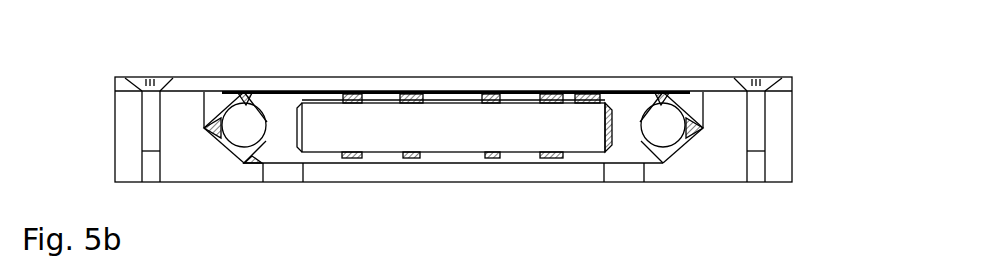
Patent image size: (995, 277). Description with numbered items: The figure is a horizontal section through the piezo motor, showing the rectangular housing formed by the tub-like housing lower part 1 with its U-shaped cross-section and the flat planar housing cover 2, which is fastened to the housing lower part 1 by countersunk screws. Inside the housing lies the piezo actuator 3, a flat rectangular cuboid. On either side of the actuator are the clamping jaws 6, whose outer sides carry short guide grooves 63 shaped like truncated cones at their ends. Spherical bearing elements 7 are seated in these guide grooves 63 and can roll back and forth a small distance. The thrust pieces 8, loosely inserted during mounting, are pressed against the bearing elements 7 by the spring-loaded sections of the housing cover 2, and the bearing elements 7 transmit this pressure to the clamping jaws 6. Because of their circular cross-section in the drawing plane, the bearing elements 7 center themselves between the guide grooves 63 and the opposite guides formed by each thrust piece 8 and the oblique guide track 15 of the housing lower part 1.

The housing lower part 1 is at (713, 163).
The housing cover 2 is at (393, 80).
The piezo actuator 3 is at (440, 127).
The clamping jaws 6 is at (278, 108).
The bearing elements 7 is at (242, 122).
The thrust pieces 8 is at (216, 106).
The guide tracks 15 is at (232, 152).
The guide grooves 63 is at (260, 143).